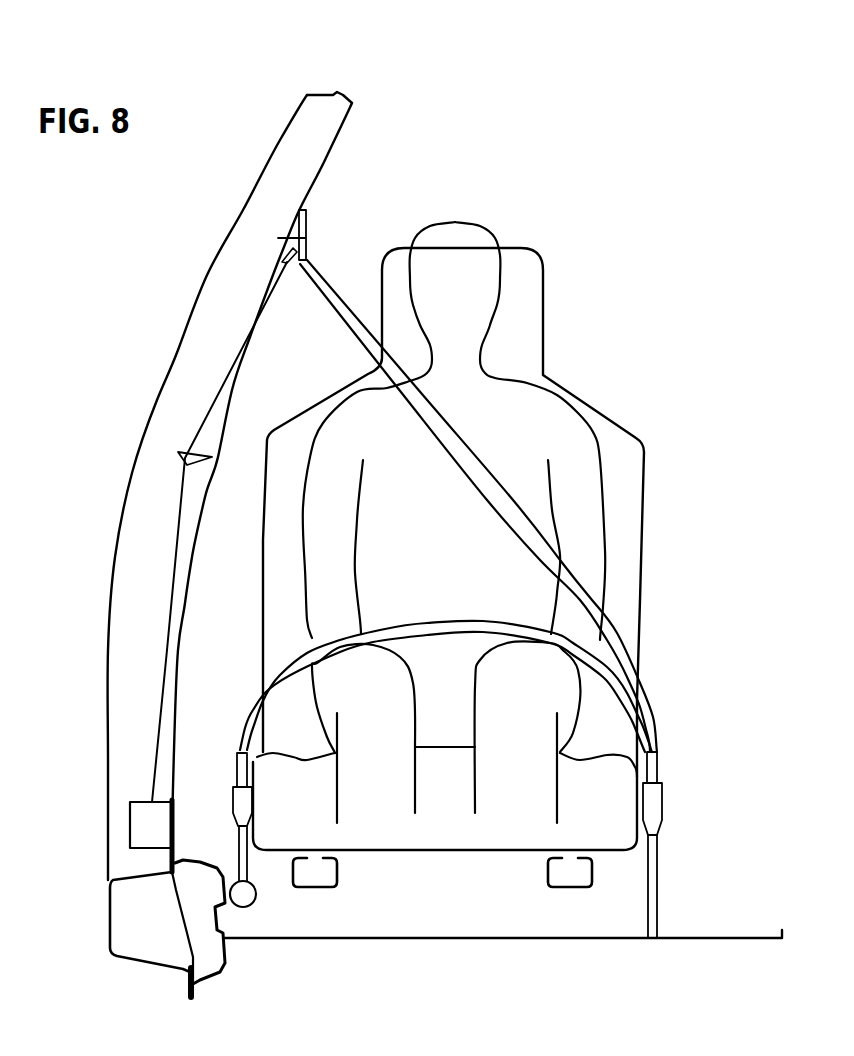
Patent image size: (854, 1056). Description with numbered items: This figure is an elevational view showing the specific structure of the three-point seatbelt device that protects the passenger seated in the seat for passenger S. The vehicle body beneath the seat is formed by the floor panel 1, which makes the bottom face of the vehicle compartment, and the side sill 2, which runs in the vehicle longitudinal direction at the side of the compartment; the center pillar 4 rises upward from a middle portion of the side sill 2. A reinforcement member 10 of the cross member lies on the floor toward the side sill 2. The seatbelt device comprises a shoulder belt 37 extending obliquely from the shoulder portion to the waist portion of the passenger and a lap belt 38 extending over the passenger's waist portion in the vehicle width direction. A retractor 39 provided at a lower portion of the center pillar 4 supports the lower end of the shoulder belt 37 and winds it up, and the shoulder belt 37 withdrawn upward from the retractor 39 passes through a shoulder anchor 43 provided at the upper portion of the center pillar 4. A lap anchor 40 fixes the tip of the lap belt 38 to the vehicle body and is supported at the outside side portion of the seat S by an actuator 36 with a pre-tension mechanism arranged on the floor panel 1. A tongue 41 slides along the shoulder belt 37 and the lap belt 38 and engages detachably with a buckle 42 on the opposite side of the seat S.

The floor panel 1 is at (430, 940).
The side sill 2 is at (99, 922).
The center pillar 4 is at (205, 271).
The reinforcement member 10 is at (320, 888).
The actuator 36 is at (244, 908).
The shoulder belt 37 is at (481, 452).
The lap belt 38 is at (433, 623).
The retractor 39 is at (140, 822).
The lap anchor 40 is at (236, 755).
The tongue 41 is at (655, 770).
The buckle 42 is at (663, 806).
The shoulder anchor 43 is at (306, 235).
The seat for passenger S is at (652, 527).